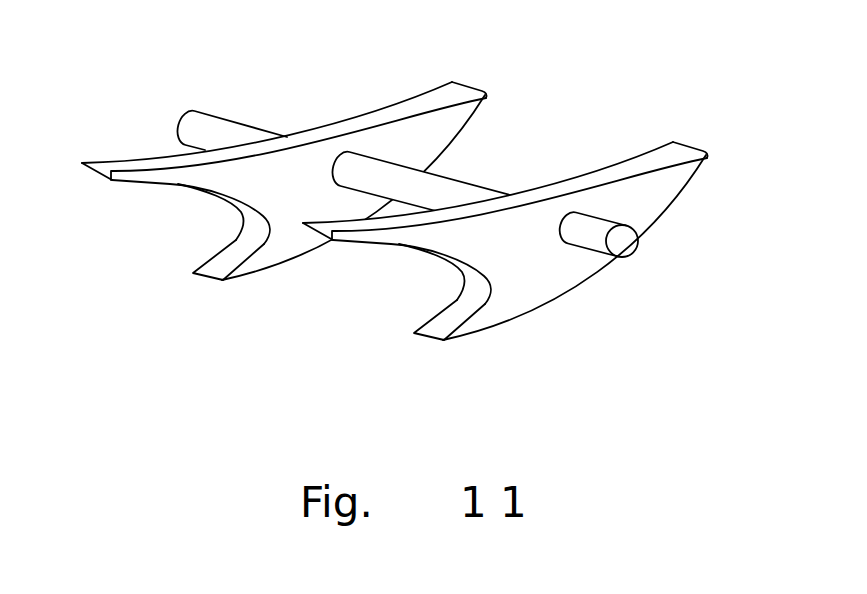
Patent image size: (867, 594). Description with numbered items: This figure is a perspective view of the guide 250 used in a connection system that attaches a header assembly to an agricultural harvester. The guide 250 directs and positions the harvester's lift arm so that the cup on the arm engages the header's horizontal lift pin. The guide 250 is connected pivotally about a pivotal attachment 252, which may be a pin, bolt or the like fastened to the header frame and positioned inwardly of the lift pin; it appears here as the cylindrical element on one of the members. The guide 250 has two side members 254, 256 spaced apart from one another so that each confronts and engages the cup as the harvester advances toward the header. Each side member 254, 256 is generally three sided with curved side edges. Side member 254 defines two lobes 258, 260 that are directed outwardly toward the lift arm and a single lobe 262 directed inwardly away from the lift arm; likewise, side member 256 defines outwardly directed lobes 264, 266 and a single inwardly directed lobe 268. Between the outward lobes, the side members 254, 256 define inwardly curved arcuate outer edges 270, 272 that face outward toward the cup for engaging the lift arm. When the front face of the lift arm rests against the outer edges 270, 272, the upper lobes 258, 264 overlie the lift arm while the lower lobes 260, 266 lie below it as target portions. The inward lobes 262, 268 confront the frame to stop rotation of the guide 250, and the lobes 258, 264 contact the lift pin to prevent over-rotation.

The guide 250 is at (232, 68).
The pivotal attachment 252 is at (625, 247).
The side member 254 is at (278, 245).
The side member 256 is at (540, 280).
The lobe 258 is at (115, 165).
The lobe 260 is at (242, 268).
The lobe 262 is at (477, 102).
The lobe 264 is at (380, 233).
The lobe 266 is at (465, 330).
The lobe 268 is at (688, 170).
The arcuate outer edge 270 is at (180, 185).
The arcuate outer edge 272 is at (417, 245).